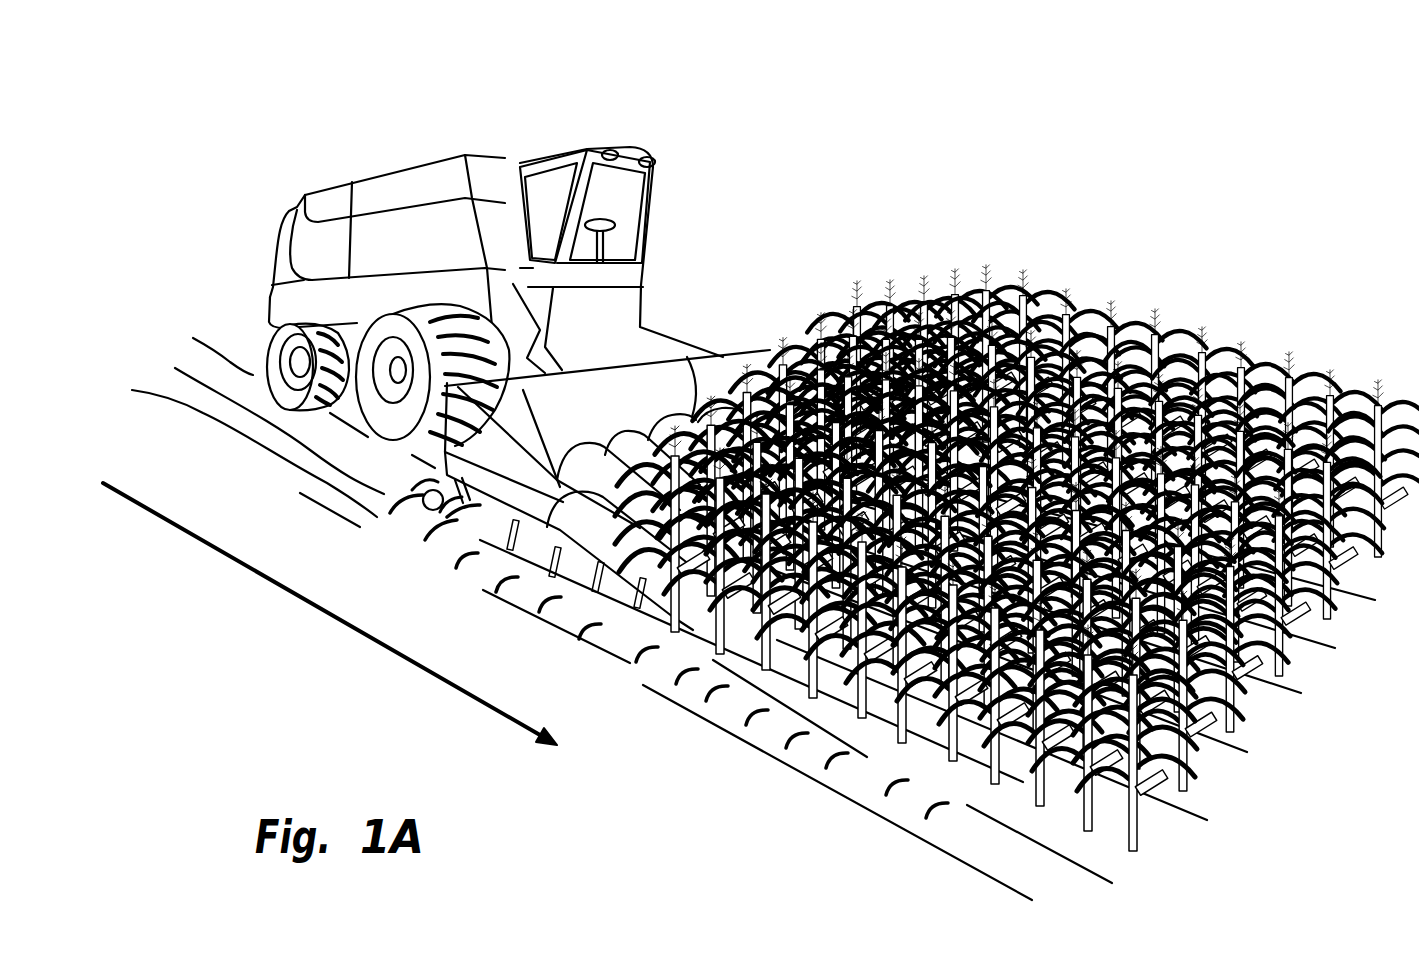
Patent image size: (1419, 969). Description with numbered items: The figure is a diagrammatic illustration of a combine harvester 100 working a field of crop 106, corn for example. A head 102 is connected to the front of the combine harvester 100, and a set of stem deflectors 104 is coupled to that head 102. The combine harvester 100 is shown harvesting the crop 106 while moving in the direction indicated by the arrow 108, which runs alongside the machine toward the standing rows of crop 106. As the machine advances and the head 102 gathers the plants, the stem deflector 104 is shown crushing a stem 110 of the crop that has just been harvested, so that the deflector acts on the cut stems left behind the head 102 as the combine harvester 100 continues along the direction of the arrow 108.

The combine harvester 100 is at (545, 155).
The head 102 is at (725, 355).
The stem deflector 104 is at (423, 516).
The crop 106 is at (1264, 340).
The arrow 108 is at (282, 587).
The stem 110 is at (470, 515).